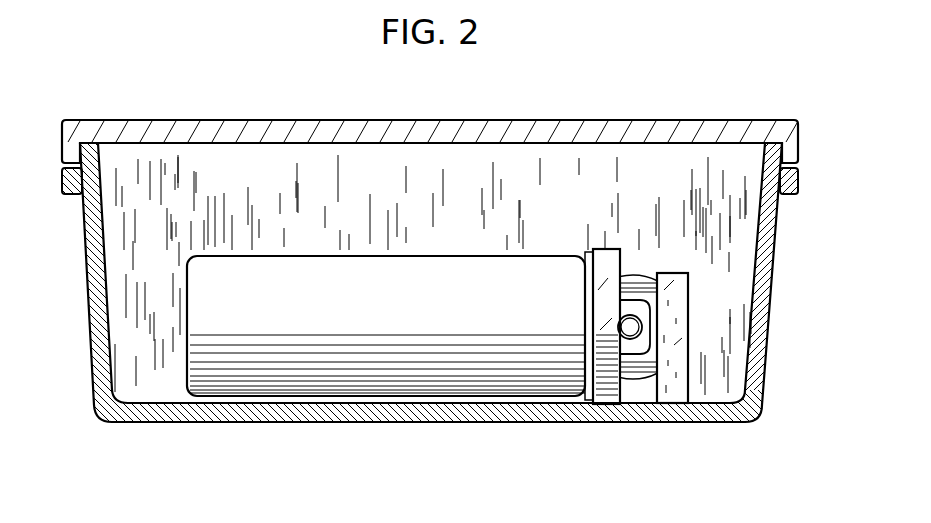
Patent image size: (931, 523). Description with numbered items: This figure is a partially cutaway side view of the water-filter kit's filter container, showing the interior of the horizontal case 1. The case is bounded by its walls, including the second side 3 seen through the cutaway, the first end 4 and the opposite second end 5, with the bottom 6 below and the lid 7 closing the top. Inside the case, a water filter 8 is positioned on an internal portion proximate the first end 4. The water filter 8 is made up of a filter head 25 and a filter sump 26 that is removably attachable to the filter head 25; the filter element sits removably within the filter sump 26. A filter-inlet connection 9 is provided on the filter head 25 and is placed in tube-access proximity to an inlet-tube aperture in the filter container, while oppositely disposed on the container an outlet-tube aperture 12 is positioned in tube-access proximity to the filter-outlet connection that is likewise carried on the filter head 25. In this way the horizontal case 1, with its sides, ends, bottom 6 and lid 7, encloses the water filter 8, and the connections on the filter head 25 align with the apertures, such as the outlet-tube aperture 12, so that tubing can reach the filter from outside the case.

The horizontal case 1 is at (760, 418).
The second side 3 is at (262, 170).
The first end 4 is at (767, 273).
The second end 5 is at (97, 272).
The bottom 6 is at (494, 410).
The lid 7 is at (148, 130).
The water filter 8 is at (617, 216).
The filter-inlet connection 9 is at (642, 329).
The outlet-tube aperture 12 is at (638, 380).
The filter head 25 is at (605, 388).
The filter sump 26 is at (396, 354).